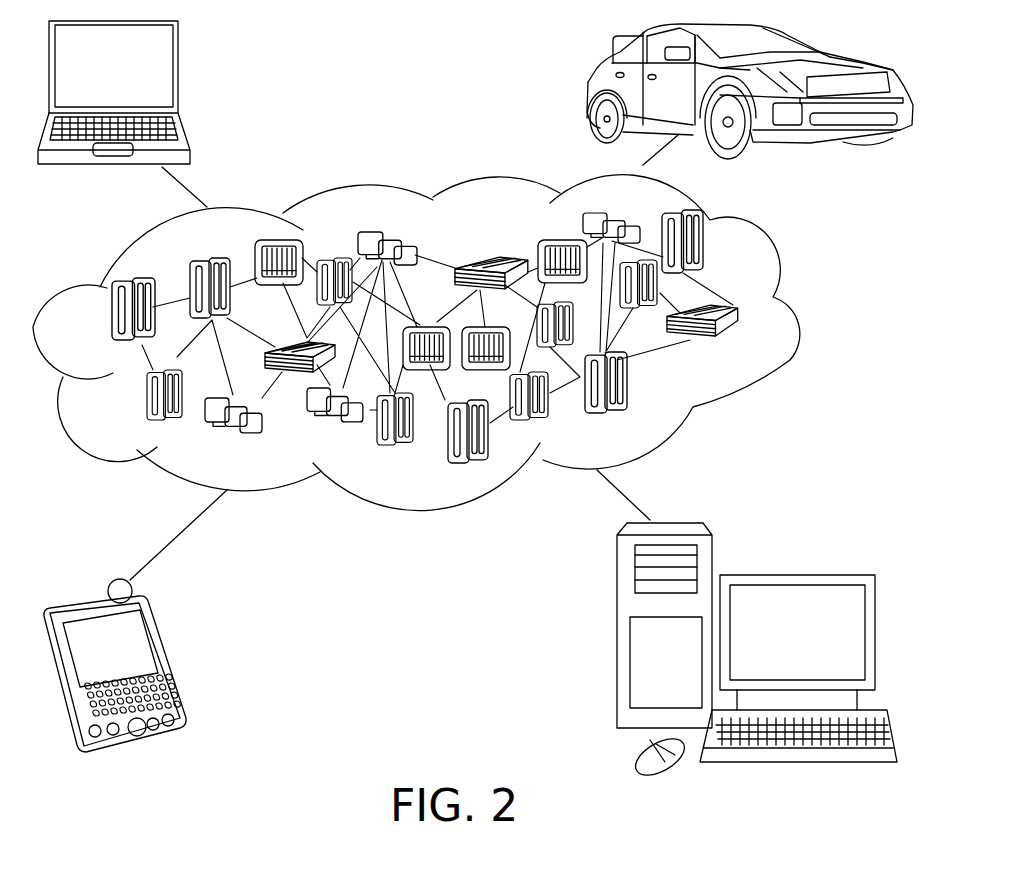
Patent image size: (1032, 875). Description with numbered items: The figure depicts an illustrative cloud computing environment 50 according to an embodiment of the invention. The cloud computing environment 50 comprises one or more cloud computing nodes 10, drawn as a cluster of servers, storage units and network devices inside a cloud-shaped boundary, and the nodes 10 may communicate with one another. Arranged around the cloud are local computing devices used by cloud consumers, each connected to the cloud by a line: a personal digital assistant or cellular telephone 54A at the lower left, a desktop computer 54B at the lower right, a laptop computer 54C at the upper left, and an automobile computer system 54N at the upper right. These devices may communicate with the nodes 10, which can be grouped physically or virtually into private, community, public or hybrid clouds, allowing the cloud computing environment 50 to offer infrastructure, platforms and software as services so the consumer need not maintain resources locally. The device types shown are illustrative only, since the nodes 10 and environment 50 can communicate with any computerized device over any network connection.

The cloud computing node 10 is at (742, 345).
The cloud computing environment 50 is at (792, 318).
The personal digital assistant or cellular telephone 54A is at (167, 662).
The desktop computer 54B is at (793, 573).
The laptop computer 54C is at (178, 73).
The automobile computer system 54N is at (588, 96).